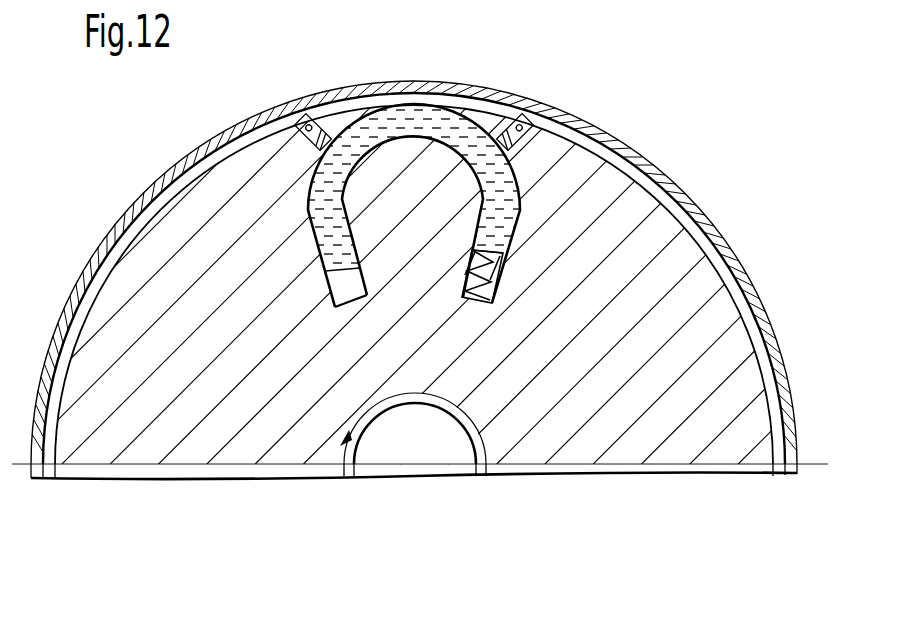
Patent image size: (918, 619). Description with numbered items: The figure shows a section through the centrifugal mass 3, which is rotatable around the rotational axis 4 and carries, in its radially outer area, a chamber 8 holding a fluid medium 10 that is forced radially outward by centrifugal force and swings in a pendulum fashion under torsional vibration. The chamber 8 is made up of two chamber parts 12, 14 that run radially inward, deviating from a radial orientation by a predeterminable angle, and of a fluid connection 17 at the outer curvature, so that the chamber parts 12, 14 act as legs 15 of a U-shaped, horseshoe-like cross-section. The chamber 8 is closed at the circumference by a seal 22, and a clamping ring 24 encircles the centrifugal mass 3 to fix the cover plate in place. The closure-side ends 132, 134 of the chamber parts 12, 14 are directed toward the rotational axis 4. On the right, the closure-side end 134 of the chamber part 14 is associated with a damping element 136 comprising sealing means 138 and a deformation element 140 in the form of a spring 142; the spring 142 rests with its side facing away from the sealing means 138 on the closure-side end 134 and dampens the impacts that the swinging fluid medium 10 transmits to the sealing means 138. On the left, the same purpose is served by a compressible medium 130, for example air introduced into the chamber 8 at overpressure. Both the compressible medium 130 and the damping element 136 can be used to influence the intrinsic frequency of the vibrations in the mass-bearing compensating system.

The centrifugal mass 3 is at (147, 252).
The rotational axis 4 is at (420, 466).
The chamber 8 is at (400, 118).
The fluid medium 10 is at (352, 112).
The chamber part 12 is at (303, 165).
The chamber part 14 is at (505, 118).
The legs 15 is at (308, 180).
The fluid connection 17 is at (458, 110).
The seal 22 is at (527, 95).
The clamping ring 24 is at (155, 187).
The compressible medium 130 is at (515, 240).
The closure-side end 132 is at (348, 306).
The closure-side end 134 is at (480, 306).
The damping element 136 is at (500, 262).
The sealing means 138 is at (528, 257).
The deformation element 140 is at (497, 292).
The spring 142 is at (490, 306).